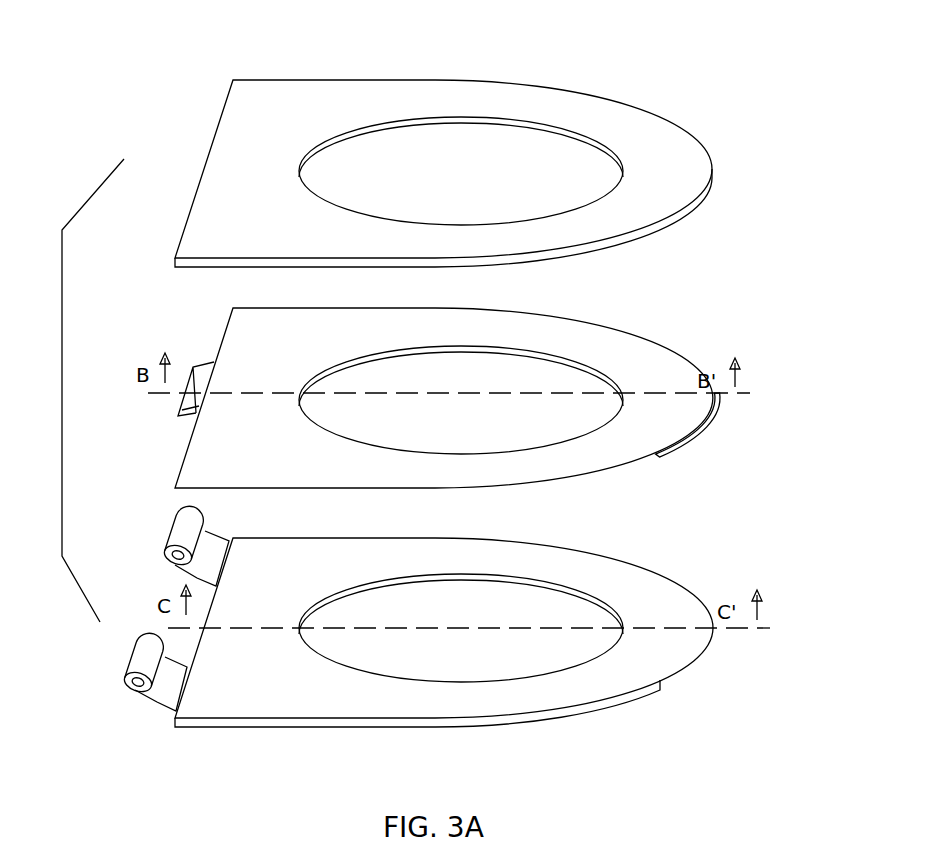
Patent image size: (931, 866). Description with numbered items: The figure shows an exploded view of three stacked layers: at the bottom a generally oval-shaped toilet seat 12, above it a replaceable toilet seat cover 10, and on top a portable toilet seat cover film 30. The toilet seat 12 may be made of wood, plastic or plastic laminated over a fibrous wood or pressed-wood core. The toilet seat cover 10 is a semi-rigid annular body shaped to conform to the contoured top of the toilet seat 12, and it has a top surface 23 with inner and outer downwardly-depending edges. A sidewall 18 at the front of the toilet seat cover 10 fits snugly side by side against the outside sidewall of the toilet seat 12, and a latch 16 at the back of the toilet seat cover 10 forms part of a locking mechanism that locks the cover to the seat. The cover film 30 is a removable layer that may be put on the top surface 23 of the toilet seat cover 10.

The replaceable toilet seat cover 10 is at (552, 308).
The portable toilet seat cover film 30 is at (648, 130).
The top surface 23 is at (647, 360).
The sidewall 18 is at (707, 431).
The latch 16 is at (197, 388).
The toilet seat 12 is at (648, 588).